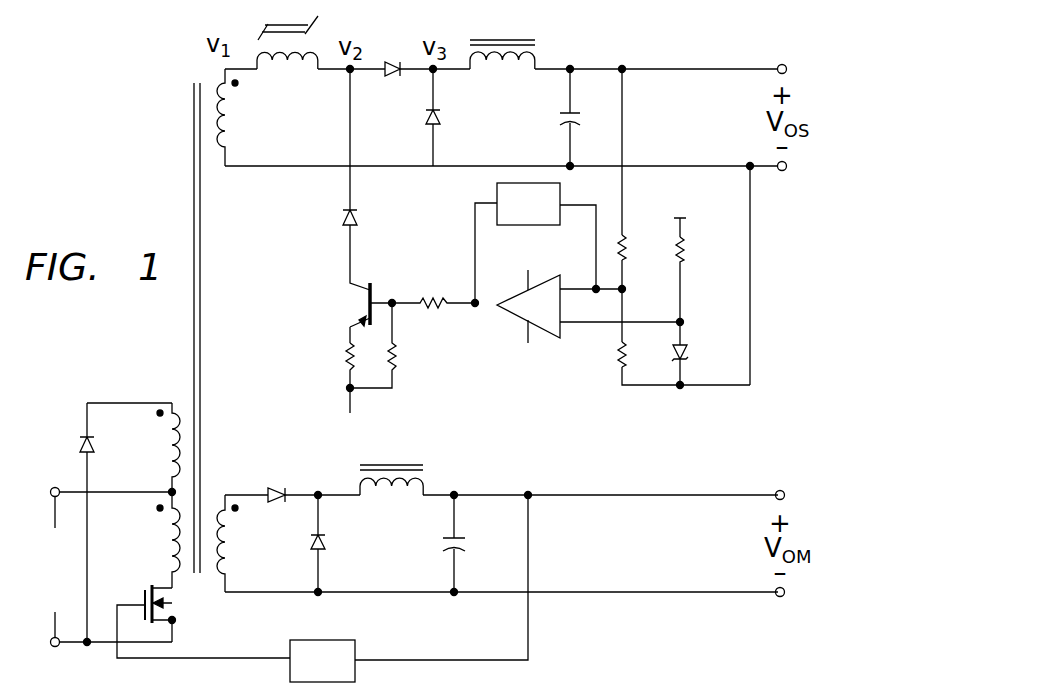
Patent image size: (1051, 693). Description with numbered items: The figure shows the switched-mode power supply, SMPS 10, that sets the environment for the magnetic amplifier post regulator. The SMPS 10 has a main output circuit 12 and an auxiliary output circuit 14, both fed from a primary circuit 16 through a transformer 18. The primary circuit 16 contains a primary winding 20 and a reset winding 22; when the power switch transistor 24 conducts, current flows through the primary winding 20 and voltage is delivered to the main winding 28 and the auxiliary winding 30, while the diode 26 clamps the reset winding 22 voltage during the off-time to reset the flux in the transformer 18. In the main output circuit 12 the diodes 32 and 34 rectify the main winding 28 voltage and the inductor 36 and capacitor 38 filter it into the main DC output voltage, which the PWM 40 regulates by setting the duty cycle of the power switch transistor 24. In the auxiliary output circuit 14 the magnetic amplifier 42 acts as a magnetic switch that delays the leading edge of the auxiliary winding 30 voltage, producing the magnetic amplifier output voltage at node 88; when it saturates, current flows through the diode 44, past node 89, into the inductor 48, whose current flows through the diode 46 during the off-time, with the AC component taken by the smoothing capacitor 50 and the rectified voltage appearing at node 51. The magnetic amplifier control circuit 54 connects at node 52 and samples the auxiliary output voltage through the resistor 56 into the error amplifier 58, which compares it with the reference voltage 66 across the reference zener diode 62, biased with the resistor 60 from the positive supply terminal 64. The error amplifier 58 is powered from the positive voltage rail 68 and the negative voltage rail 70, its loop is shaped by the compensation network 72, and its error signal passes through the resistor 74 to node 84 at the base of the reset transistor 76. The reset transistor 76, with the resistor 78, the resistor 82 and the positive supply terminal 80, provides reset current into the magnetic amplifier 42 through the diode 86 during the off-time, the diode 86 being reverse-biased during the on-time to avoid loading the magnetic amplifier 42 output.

The SMPS 10 is at (735, 52).
The main output circuit 12 is at (792, 474).
The auxiliary output circuit 14 is at (803, 58).
The primary circuit 16 is at (78, 393).
The transformer 18 is at (216, 292).
The primary winding 20 is at (168, 566).
The reset winding 22 is at (156, 418).
The power switch transistor 24 is at (182, 606).
The diode 26 is at (80, 446).
The main winding 28 is at (232, 566).
The auxiliary winding 30 is at (232, 135).
The diode 32 is at (277, 490).
The diode 34 is at (322, 540).
The inductor 36 is at (432, 476).
The capacitor 38 is at (440, 546).
The PWM 40 is at (355, 648).
The magnetic amplifier 42 is at (288, 74).
The diode 44 is at (388, 64).
The diode 46 is at (426, 118).
The inductor 48 is at (516, 74).
The smoothing capacitor 50 is at (554, 128).
The node 51 is at (571, 66).
The node 52 is at (624, 66).
The magnetic amplifier control circuit 54 is at (765, 259).
The resistor 56 is at (626, 248).
The error amplifier 58 is at (554, 318).
The resistor 60 is at (620, 360).
The reference zener diode 62 is at (686, 352).
The VCC terminal 64 is at (684, 226).
The reference voltage 66 is at (684, 258).
The VCC voltage rail 68 is at (528, 278).
The VEE voltage rail 70 is at (528, 336).
The compensation network 72 is at (497, 192).
The resistor 74 is at (433, 298).
The reset transistor 76 is at (378, 272).
The resistor 78 is at (346, 352).
The VCC terminal 80 is at (352, 396).
The resistor 82 is at (396, 369).
The node 84 is at (394, 306).
The diode 86 is at (346, 214).
The node 88 is at (351, 72).
The node 89 is at (436, 72).